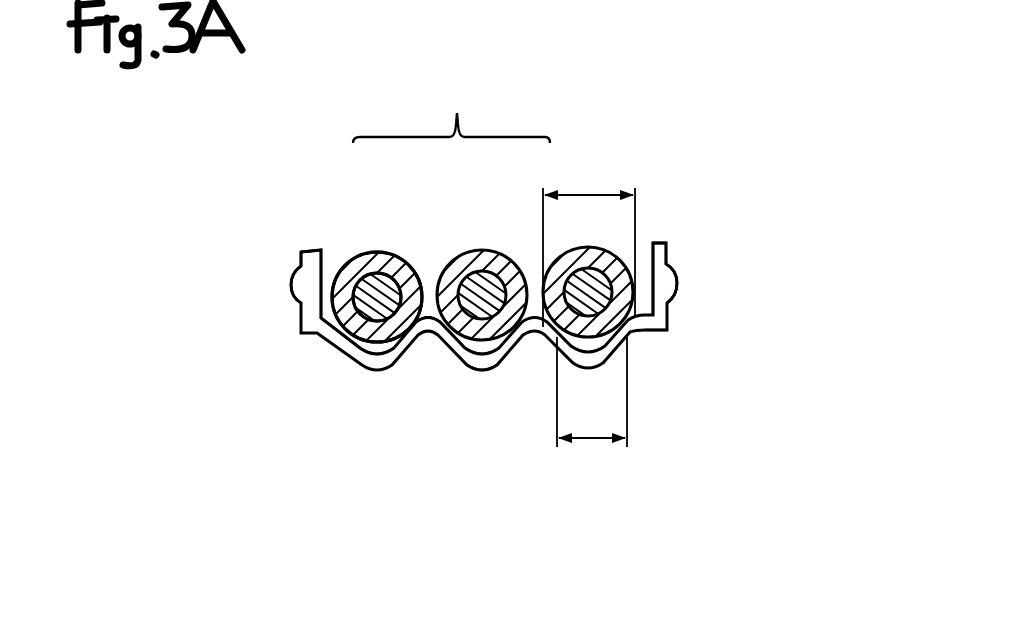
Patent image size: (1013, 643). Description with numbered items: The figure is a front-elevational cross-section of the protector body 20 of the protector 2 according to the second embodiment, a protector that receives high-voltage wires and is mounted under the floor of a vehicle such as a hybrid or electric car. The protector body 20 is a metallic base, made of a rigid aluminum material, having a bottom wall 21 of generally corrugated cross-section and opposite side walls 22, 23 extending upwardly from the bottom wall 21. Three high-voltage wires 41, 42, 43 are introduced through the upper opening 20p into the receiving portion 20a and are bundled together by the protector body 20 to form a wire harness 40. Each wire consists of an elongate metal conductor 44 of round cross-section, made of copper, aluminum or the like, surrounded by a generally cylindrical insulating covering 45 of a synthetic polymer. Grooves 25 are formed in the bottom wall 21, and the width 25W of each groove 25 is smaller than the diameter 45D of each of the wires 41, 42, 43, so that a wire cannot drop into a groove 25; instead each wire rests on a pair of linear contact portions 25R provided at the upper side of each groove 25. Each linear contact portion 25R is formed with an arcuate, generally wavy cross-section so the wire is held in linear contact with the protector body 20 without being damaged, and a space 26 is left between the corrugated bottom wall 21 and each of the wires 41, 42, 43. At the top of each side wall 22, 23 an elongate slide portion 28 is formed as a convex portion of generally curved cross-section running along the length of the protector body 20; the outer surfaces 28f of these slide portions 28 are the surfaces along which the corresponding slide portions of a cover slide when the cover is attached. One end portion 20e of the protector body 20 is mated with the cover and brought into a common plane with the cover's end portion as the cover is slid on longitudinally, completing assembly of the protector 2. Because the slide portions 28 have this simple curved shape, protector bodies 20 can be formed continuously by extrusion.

The protector 2 is at (707, 117).
The protector body 20 is at (672, 246).
The receiving portion 20a is at (316, 252).
The upper opening 20p is at (656, 244).
The one end portion 20e is at (675, 331).
The bottom wall 21 is at (478, 364).
The side wall 22 is at (298, 259).
The side wall 23 is at (668, 254).
The groove 25 is at (365, 341).
The linear contact portion 25R is at (345, 343).
The width of groove 25W is at (588, 447).
The space 26 is at (507, 366).
The slide portion 28 is at (292, 286).
The outer surface of slide portion 28f is at (293, 301).
The wire harness 40 is at (451, 106).
The high-voltage wire 41 is at (380, 251).
The high-voltage wire 42 is at (468, 248).
The high-voltage wire 43 is at (566, 246).
The metal conductor 44 is at (360, 265).
The insulating covering 45 is at (346, 272).
The diameter of wire 45D is at (592, 190).